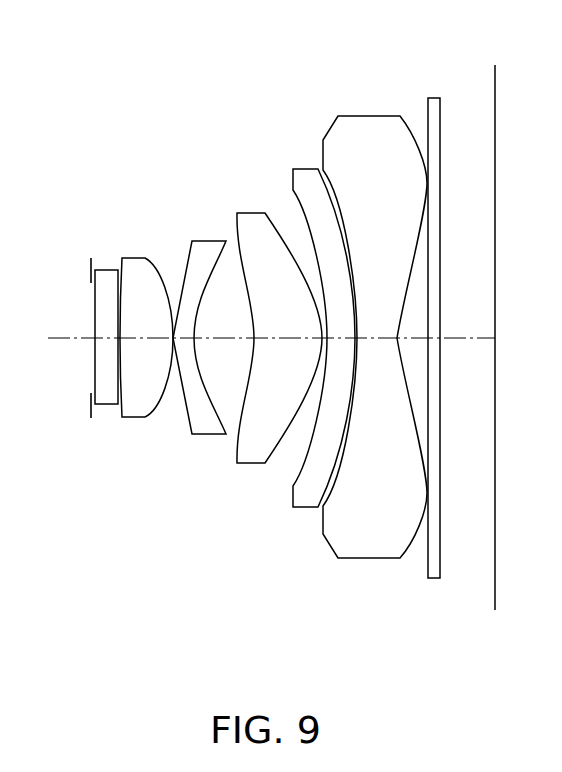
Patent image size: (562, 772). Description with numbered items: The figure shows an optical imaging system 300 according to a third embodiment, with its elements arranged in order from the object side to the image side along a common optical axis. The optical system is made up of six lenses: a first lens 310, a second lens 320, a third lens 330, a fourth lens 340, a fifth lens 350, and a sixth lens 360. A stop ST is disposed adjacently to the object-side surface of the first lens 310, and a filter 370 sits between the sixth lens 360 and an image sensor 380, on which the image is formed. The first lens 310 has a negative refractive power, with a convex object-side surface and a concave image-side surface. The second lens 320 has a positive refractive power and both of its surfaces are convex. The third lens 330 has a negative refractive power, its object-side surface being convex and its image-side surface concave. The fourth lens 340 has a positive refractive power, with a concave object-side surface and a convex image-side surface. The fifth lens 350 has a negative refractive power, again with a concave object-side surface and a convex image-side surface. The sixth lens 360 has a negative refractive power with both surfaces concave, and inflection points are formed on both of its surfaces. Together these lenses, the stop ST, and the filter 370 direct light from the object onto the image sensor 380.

The optical imaging system 300 is at (226, 130).
The stop ST is at (91, 270).
The first lens 310 is at (108, 406).
The second lens 320 is at (133, 419).
The third lens 330 is at (210, 436).
The fourth lens 340 is at (253, 465).
The fifth lens 350 is at (305, 509).
The sixth lens 360 is at (368, 560).
The filter 370 is at (428, 563).
The image sensor 380 is at (495, 570).